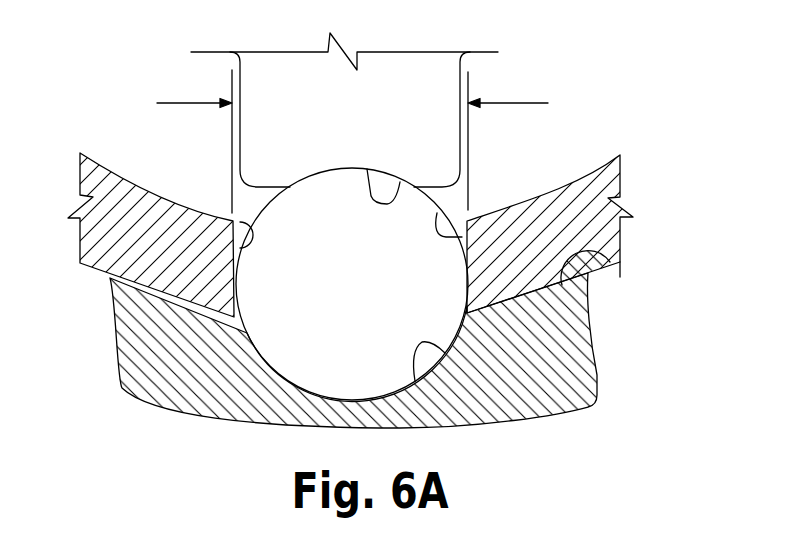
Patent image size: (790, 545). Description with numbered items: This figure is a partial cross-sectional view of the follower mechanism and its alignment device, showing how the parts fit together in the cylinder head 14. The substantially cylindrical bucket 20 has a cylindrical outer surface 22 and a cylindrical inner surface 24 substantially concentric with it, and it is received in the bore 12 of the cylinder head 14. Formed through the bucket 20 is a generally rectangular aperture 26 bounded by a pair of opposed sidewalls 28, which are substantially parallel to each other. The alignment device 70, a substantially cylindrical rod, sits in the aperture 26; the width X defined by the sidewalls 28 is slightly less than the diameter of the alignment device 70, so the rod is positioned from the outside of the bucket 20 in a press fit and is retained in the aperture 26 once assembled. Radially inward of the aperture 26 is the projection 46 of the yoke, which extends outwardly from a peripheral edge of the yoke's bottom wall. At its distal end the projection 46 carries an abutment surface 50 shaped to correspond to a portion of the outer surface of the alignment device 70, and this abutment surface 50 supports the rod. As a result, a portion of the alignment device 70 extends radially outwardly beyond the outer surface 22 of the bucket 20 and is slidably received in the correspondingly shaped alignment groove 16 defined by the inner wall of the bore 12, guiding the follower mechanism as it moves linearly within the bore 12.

The projection 46 is at (338, 122).
The abutment surface 50 is at (398, 190).
The aperture 26 is at (245, 203).
The opposed sidewalls 28 is at (240, 222).
The cylindrical inner surface 24 is at (597, 165).
The bucket 20 is at (145, 254).
The alignment device 70 is at (336, 296).
The bore 12 is at (586, 252).
The cylindrical outer surface 22 is at (99, 272).
The cylinder head 14 is at (160, 369).
The alignment groove 16 is at (445, 353).